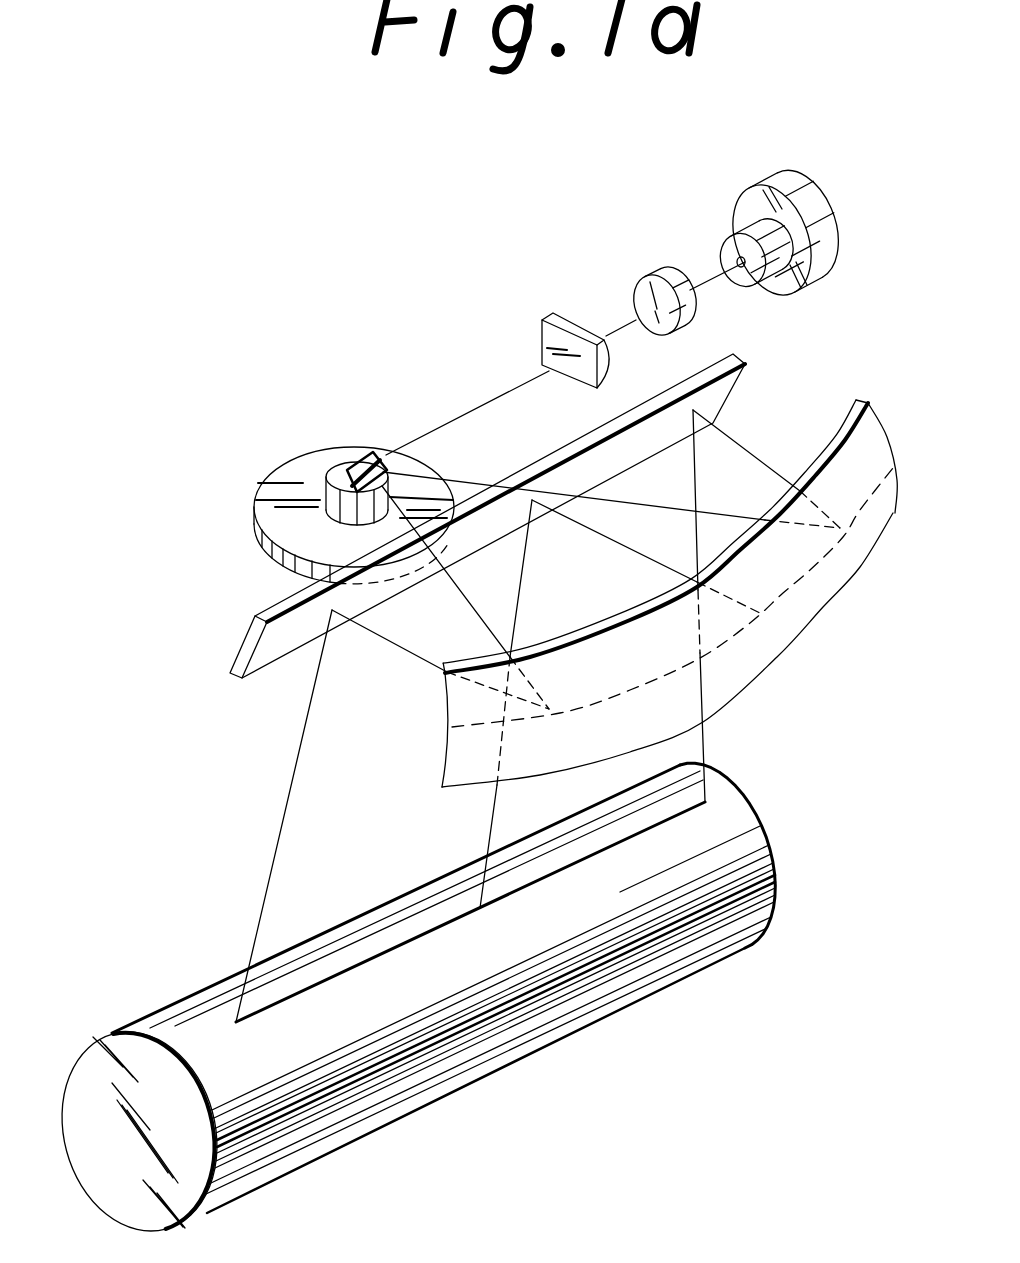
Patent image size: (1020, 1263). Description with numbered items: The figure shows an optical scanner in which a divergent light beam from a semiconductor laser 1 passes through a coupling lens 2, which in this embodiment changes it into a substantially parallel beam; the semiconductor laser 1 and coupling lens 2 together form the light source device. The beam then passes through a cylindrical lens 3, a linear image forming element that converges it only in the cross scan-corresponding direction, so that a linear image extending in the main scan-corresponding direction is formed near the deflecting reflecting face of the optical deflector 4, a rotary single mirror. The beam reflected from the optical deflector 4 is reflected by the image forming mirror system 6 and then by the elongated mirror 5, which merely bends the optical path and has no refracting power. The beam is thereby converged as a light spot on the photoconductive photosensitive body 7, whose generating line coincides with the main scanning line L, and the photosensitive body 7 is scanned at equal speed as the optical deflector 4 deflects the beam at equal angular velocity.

The semiconductor laser 1 is at (752, 202).
The coupling lens 2 is at (666, 275).
The cylindrical lens 3 is at (573, 322).
The optical deflector 4 is at (318, 460).
The elongated mirror 5 is at (252, 637).
The image forming mirror system 6 is at (795, 625).
The photoconductive photosensitive body 7 is at (633, 1004).
The main scanning line L is at (370, 957).